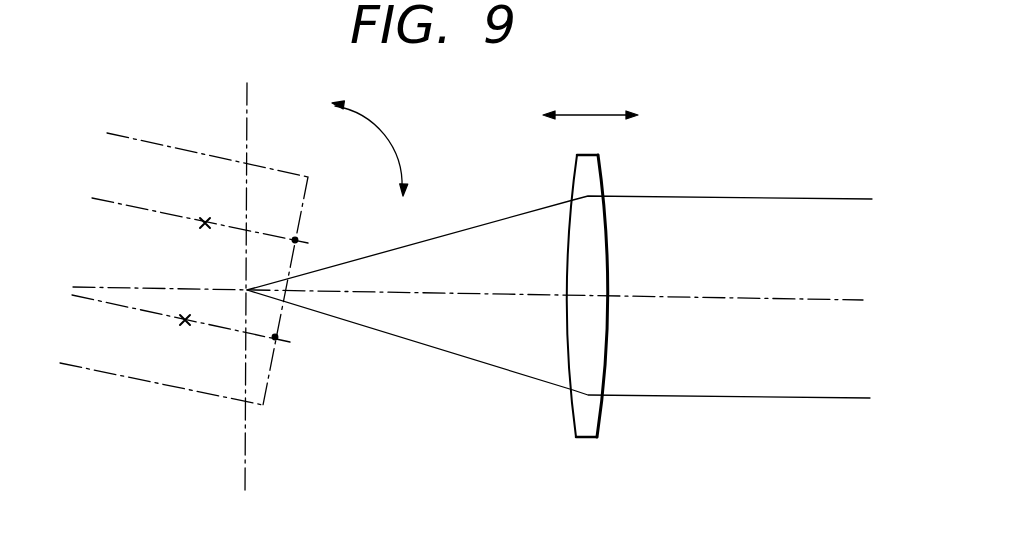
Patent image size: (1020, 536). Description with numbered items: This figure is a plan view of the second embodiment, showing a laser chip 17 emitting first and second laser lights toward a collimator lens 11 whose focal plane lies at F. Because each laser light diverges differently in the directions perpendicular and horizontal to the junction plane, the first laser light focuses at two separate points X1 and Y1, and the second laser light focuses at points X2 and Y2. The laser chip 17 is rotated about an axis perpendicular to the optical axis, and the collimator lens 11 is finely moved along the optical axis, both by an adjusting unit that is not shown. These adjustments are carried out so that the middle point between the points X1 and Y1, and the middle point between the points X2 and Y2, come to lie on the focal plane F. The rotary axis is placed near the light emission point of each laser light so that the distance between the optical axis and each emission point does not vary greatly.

The collimator lens 11 is at (595, 172).
The laser chip 17 is at (213, 398).
The focal plane F is at (247, 423).
The focus position of first laser light (perpendicular divergence) X1 is at (296, 240).
The focus position of second laser light (perpendicular divergence) X2 is at (276, 340).
The focus position of first laser light (horizontal divergence) Y1 is at (207, 218).
The focus position of second laser light (horizontal divergence) Y2 is at (186, 323).